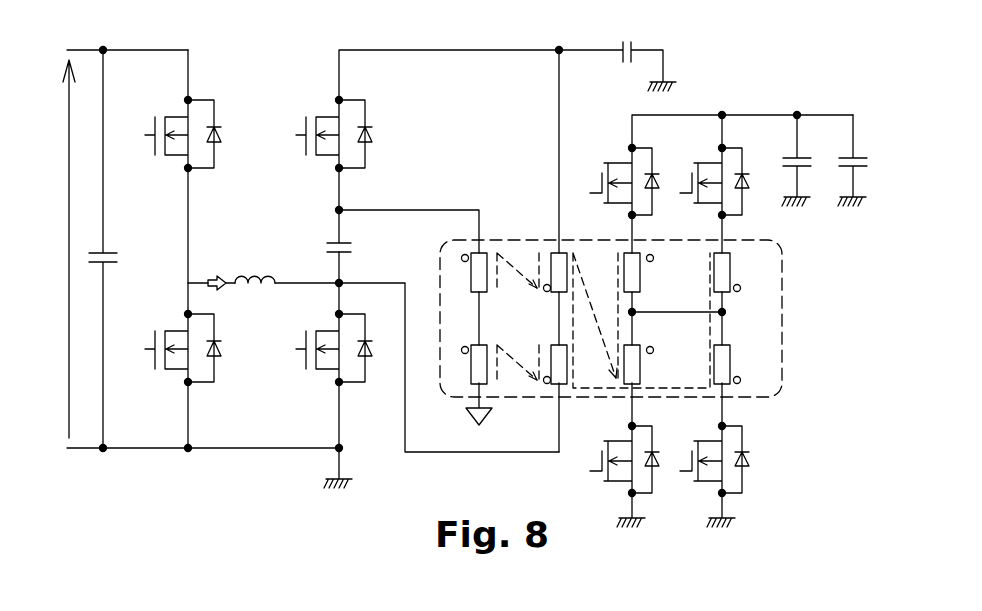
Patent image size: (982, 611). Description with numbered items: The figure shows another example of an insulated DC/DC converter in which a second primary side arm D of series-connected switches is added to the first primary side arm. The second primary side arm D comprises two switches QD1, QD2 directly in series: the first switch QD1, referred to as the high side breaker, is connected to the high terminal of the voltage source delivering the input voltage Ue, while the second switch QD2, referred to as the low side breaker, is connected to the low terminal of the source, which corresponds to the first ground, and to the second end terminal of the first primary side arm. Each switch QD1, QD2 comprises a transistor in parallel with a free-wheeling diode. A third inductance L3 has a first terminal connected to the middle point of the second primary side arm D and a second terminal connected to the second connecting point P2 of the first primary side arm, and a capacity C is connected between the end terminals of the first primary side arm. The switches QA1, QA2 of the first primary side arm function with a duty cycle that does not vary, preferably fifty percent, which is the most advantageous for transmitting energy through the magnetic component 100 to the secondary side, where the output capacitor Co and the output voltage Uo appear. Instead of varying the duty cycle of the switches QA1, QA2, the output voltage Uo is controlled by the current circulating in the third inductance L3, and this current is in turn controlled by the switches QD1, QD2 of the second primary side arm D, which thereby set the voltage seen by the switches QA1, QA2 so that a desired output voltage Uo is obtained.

The second primary side arm D is at (189, 83).
The first switch QD1 is at (165, 157).
The second switch QD2 is at (170, 371).
The switch of the first primary side arm QA1 is at (316, 157).
The switch of the first primary side arm QA2 is at (321, 371).
The third inductance L3 is at (257, 286).
The second connecting point P2 is at (337, 281).
The capacity C is at (616, 50).
The output capacitor Co is at (803, 160).
The output voltage Uo is at (860, 160).
The input voltage Ue is at (55, 249).
The magnetic component 100 is at (733, 312).